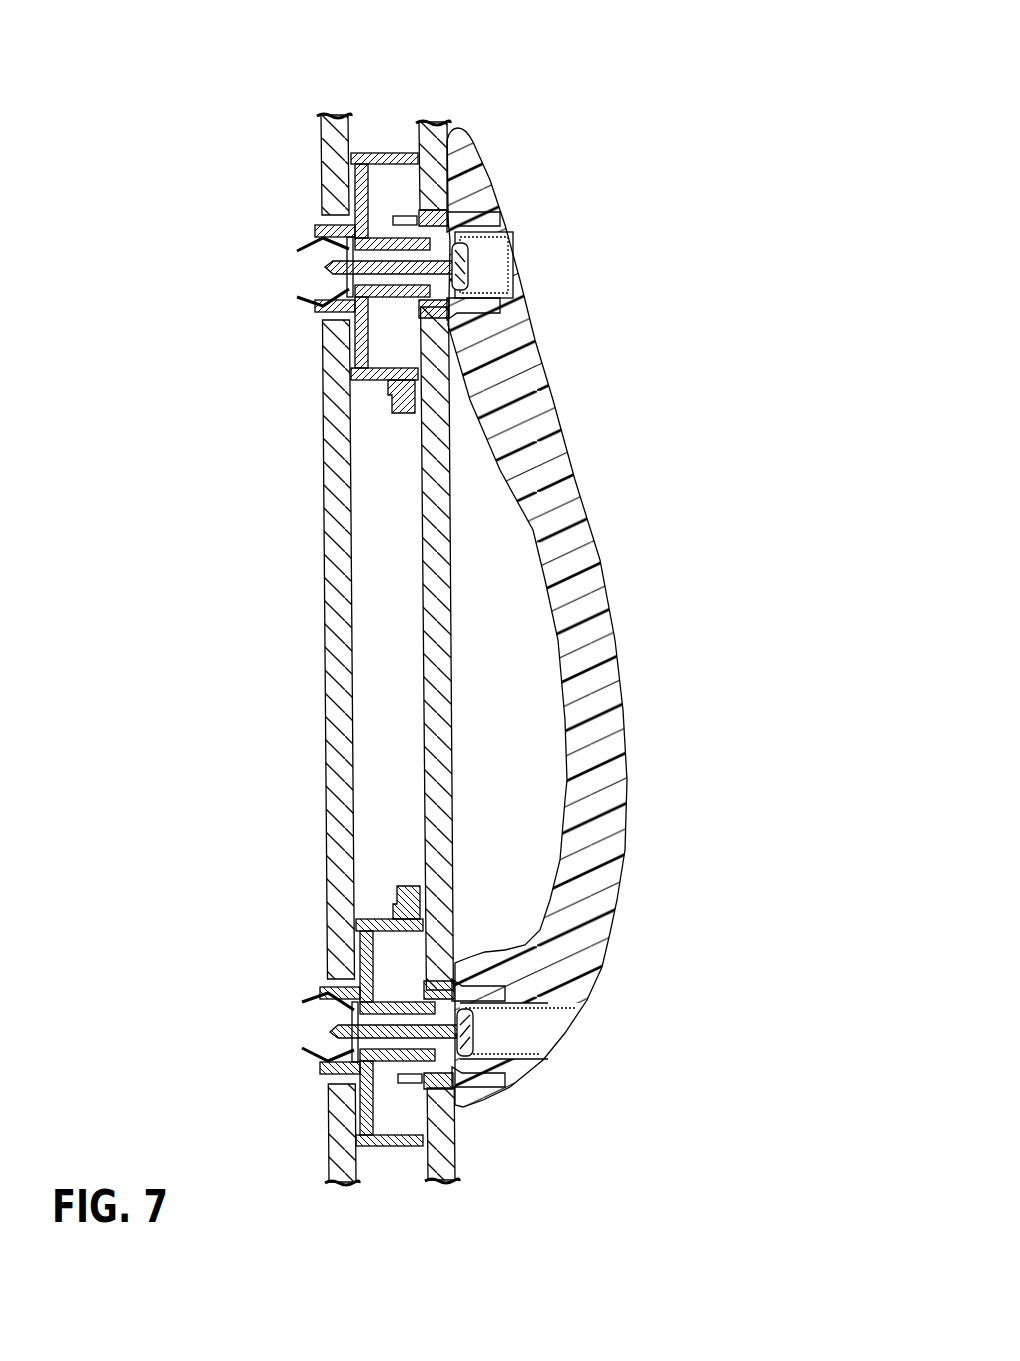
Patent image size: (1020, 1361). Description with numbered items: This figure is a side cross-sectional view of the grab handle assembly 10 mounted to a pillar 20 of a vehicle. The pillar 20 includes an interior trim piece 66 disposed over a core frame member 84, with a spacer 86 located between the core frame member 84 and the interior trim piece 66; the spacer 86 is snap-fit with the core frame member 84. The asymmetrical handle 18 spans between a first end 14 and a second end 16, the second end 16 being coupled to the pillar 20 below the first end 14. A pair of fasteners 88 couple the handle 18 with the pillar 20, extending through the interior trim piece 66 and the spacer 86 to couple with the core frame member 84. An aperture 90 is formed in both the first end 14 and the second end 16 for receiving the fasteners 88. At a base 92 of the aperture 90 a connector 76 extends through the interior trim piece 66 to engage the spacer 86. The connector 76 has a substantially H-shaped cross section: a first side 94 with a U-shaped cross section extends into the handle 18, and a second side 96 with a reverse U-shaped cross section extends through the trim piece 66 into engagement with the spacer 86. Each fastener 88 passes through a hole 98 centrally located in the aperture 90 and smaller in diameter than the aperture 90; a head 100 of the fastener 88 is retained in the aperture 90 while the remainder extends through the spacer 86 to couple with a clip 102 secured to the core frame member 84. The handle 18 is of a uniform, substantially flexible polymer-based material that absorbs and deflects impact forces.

The grab handle assembly 10 is at (456, 639).
The first end 14 is at (467, 153).
The second end 16 is at (475, 1093).
The asymmetrical handle 18 is at (567, 629).
The pillar 20 is at (390, 799).
The interior trim piece 66 is at (437, 670).
The connector 76 is at (408, 218).
The core frame member 84 is at (340, 677).
The spacer 86 is at (377, 375).
The fastener 88 is at (337, 270).
The aperture 90 is at (500, 250).
The base 92 is at (473, 280).
The first side 94 is at (480, 312).
The second side 96 is at (432, 318).
The hole 98 is at (470, 245).
The head 100 is at (470, 270).
The clip 102 is at (303, 293).